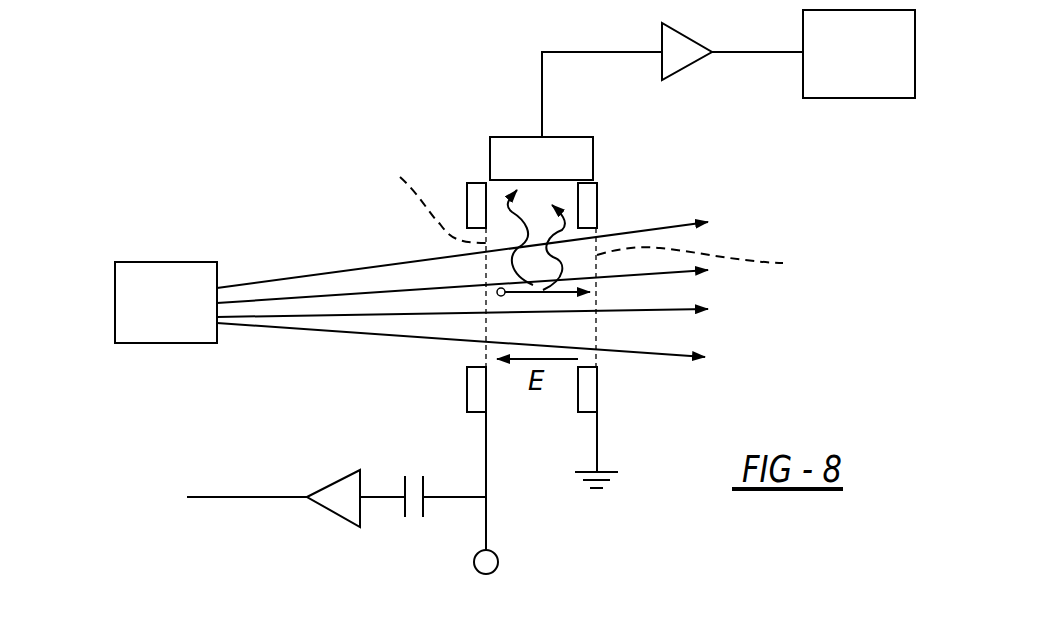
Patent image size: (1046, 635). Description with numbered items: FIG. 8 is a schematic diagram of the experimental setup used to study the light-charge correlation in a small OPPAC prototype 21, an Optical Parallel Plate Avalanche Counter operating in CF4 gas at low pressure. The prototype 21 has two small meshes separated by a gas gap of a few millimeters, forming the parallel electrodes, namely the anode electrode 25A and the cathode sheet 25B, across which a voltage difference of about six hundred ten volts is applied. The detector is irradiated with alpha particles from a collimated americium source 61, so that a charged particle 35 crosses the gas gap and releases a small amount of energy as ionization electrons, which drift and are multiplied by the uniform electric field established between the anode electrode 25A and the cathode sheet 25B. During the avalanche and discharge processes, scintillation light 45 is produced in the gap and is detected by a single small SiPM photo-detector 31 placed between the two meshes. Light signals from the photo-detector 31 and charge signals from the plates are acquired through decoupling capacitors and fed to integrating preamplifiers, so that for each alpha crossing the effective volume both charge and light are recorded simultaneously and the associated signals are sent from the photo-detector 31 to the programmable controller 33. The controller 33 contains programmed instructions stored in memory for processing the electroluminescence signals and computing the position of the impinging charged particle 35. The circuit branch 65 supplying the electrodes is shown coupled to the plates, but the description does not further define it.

The OPPAC prototype 21 is at (303, 188).
The anode electrode 25A is at (424, 195).
The cathode sheet 25B is at (712, 264).
The photo-detector 31 is at (551, 176).
The programmable controller 33 is at (867, 70).
The charged particle 35 is at (497, 292).
The scintillation light 45 is at (565, 224).
The collimated 241-Am source 61 is at (174, 312).
The voltage source circuit 65 is at (250, 497).